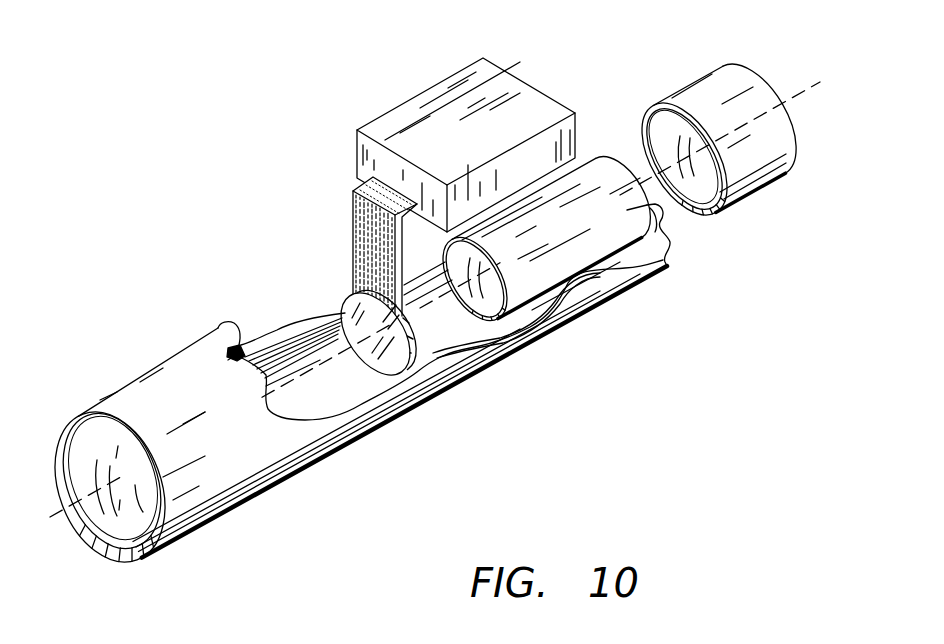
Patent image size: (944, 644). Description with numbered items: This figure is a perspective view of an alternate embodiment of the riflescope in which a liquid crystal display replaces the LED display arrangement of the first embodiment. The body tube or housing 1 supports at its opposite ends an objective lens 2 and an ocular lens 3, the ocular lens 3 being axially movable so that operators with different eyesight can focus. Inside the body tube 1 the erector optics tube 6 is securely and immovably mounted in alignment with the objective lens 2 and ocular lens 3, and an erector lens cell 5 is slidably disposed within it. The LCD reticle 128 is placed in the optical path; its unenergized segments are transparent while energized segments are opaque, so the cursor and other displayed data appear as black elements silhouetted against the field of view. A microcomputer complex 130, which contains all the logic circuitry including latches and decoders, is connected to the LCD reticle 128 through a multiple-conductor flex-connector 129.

The body tube or housing 1 is at (470, 374).
The objective lens 2 is at (78, 452).
The ocular lens 3 is at (722, 214).
The erector lens cell 5 is at (540, 327).
The erector optics tube 6 is at (668, 265).
The LCD reticle 128 is at (343, 306).
The multiple-conductor flex-connector 129 is at (352, 213).
The microcomputer complex 130 is at (440, 82).